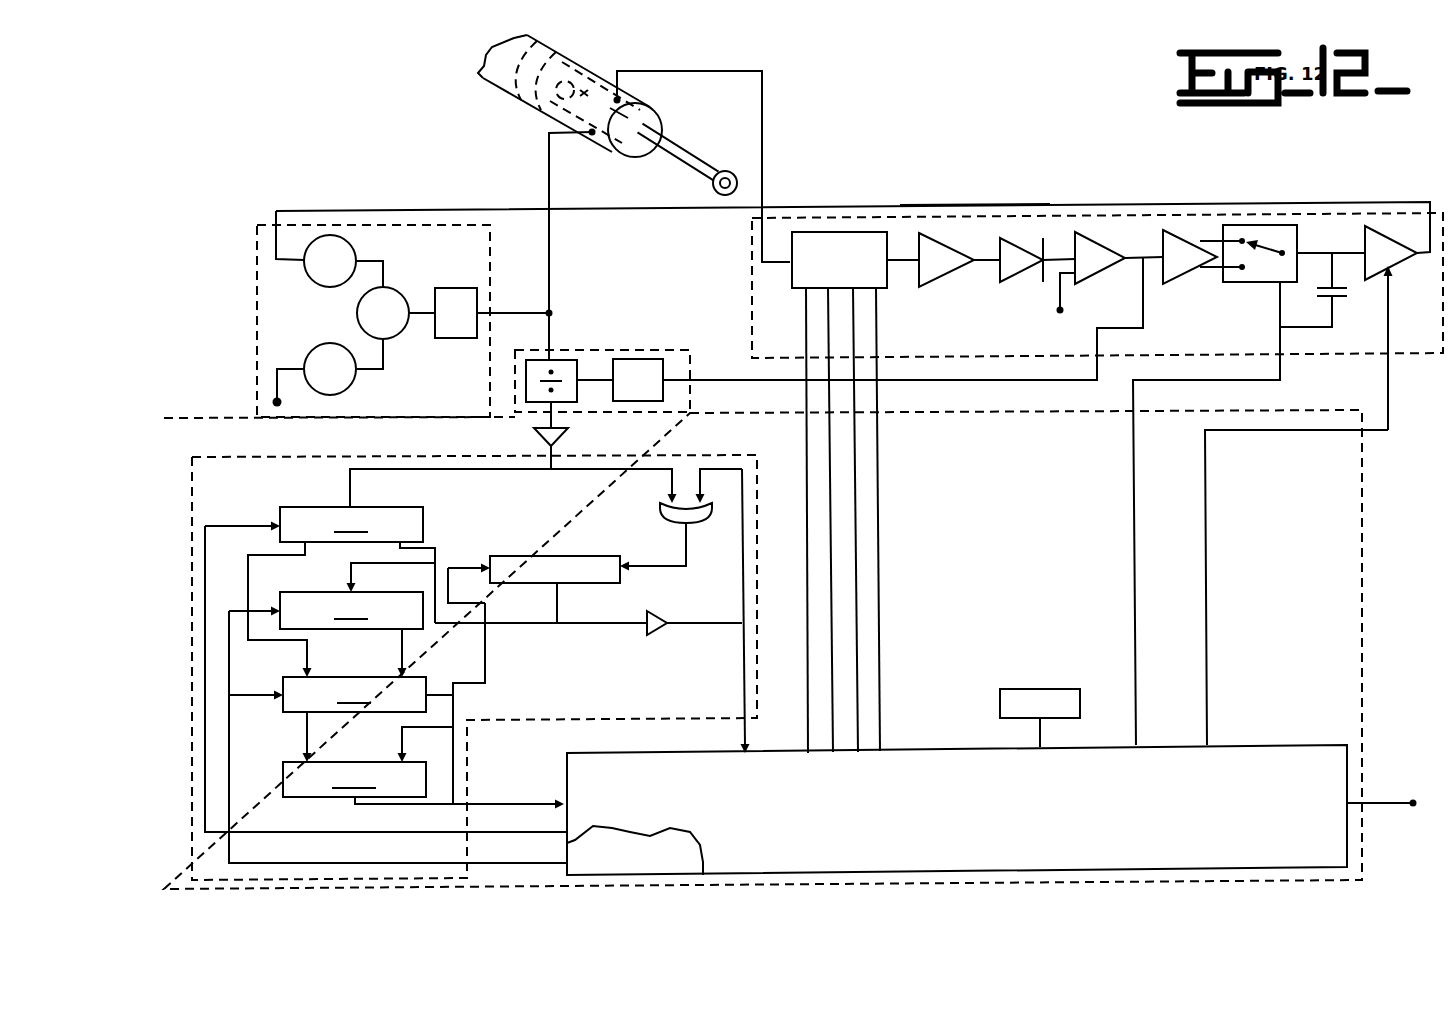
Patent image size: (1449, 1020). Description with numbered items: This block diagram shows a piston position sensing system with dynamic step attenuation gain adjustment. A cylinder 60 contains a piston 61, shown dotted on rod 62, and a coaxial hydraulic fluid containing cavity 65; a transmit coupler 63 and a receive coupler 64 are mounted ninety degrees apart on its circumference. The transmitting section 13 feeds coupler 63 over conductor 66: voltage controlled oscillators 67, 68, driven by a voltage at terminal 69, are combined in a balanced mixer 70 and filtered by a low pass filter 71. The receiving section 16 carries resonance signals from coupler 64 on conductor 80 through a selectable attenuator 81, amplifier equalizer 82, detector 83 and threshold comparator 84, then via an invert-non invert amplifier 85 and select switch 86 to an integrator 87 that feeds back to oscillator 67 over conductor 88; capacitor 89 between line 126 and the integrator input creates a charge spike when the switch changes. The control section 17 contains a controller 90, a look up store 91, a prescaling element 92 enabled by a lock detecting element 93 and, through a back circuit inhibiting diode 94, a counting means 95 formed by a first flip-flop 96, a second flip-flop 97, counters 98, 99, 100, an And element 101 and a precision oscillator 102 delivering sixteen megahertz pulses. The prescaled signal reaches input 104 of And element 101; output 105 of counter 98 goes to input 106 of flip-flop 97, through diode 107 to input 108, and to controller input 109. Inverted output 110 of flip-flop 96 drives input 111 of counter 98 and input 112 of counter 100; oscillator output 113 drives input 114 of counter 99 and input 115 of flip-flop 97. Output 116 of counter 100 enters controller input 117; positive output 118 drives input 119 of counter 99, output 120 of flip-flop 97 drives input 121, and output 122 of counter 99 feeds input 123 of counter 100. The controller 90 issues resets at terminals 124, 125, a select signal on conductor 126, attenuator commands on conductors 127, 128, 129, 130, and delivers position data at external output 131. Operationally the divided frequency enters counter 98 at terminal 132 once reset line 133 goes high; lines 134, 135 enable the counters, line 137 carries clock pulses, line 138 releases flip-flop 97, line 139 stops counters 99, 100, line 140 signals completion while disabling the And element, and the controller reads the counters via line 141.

The transmitting section 13 is at (257, 282).
The receiving section 16 is at (752, 272).
The control section 17 is at (1362, 628).
The cylinder 60 is at (478, 63).
The piston 61 is at (528, 103).
The rod 62 is at (682, 160).
The transmit coupler 63 is at (592, 136).
The receive coupler 64 is at (618, 105).
The hydraulic fluid containing cavity 65 is at (617, 100).
The conductor 66 is at (549, 196).
The voltage controlled oscillator 67 is at (356, 255).
The voltage controlled oscillator 68 is at (330, 343).
The terminal 69 is at (273, 402).
The balanced mixer 70 is at (357, 313).
The low pass filter 71 is at (455, 330).
The conductor 80 is at (764, 132).
The selectable attenuator element 81 is at (795, 290).
The amplifier equalizer element 82 is at (955, 282).
The detector element 83 is at (1025, 282).
The threshold comparator 84 is at (1112, 278).
The invert-non invert amplifier 85 is at (1195, 283).
The select switch 86 is at (1258, 283).
The integrator 87 is at (1398, 268).
The conductor 88 is at (975, 205).
The capacitor 89 is at (1327, 295).
The controller element 90 is at (1332, 778).
The look up store element 91 is at (1035, 689).
The prescaling element 92 is at (568, 402).
The lock detecting element 93 is at (648, 402).
The back circuit inhibiting diode 94 is at (538, 440).
The counting means 95 is at (758, 618).
The first flip-flop 96 is at (351, 524).
The second flip-flop 97 is at (351, 610).
The first counter 98 is at (570, 555).
The second counter 99 is at (354, 694).
The third counter 100 is at (354, 779).
The And element 101 is at (665, 522).
The precision oscillator 102 is at (620, 832).
The input 104 is at (668, 500).
The output 105 is at (352, 492).
The input 106 is at (560, 590).
The back circuit inhibiting diode 107 is at (655, 636).
The input 108 is at (712, 505).
The input 109 is at (742, 750).
The inverted output 110 is at (402, 548).
The input 111 is at (492, 583).
The input 112 is at (405, 758).
The output 113 is at (563, 860).
The input 114 is at (278, 700).
The input 115 is at (275, 615).
The output 116 is at (352, 804).
The input 117 is at (566, 800).
The positive output 118 is at (305, 548).
The input 119 is at (312, 676).
The output 120 is at (403, 635).
The input 121 is at (410, 675).
The output 122 is at (310, 735).
The input 123 is at (300, 760).
The terminal 124 is at (552, 804).
The terminal 125 is at (1208, 740).
The conductor 126 is at (1140, 745).
The conductor 127 is at (808, 757).
The conductor 128 is at (833, 770).
The conductor 129 is at (858, 770).
The conductor 130 is at (880, 758).
The external utilization output 131 is at (1389, 819).
The terminal 132 is at (628, 570).
The line 133 is at (228, 522).
The line 134 is at (250, 590).
The line 135 is at (480, 685).
The line 137 is at (343, 862).
The line 138 is at (500, 625).
The line 139 is at (392, 637).
The line 140 is at (735, 628).
The line 141 is at (463, 800).